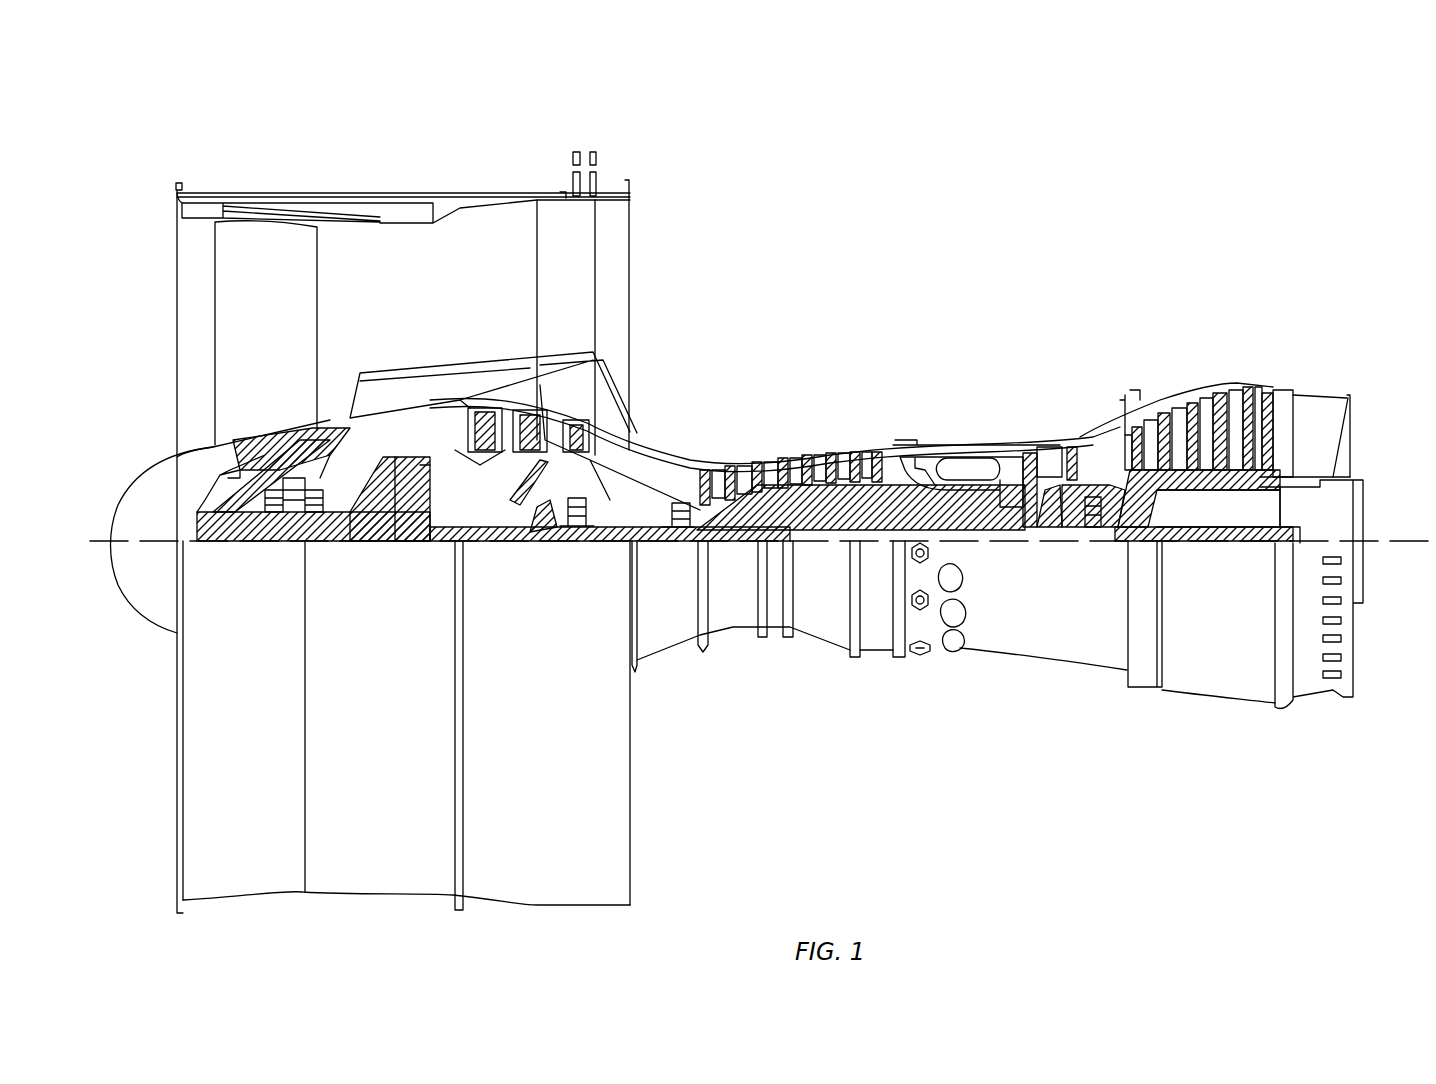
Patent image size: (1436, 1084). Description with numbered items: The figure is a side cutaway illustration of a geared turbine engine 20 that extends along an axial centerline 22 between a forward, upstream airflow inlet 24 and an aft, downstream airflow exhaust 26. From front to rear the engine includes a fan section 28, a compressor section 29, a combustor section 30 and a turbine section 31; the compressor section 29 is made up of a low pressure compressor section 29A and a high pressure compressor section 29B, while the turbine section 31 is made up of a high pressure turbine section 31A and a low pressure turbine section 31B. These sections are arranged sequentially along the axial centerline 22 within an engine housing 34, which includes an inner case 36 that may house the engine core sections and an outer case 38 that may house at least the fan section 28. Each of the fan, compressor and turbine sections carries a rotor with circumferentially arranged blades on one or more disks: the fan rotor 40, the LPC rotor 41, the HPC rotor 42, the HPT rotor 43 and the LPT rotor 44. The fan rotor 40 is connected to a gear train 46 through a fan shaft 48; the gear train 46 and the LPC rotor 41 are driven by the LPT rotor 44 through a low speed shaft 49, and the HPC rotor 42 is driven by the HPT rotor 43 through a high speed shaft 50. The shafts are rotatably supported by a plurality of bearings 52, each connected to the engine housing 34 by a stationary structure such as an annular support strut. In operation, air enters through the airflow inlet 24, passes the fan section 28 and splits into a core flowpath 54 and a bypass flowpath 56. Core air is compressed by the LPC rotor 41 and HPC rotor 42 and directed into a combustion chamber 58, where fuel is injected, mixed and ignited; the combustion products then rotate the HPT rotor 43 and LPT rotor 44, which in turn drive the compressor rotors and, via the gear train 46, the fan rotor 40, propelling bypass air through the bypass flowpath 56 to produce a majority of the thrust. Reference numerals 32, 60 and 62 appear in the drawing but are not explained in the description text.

The geared turbine engine 20 is at (145, 163).
The axial centerline 22 is at (1420, 560).
The airflow inlet 24 is at (177, 275).
The airflow exhaust 26 is at (1355, 428).
The fan section 28 is at (365, 162).
The compressor section 29 is at (878, 102).
The low pressure compressor section 29A is at (631, 152).
The high pressure compressor section 29B is at (878, 335).
The combustor section 30 is at (1012, 335).
The turbine section 31 is at (1307, 255).
The high pressure turbine section 31A is at (1105, 335).
The low pressure turbine section 31B is at (1307, 335).
The turbine exhaust case 32 is at (1358, 318).
The engine housing 34 is at (674, 686).
The inner case 36 is at (873, 652).
The outer case 38 is at (580, 905).
The fan rotor 40 is at (213, 450).
The LPC rotor 41 is at (520, 500).
The HPC rotor 42 is at (818, 500).
The HPT rotor 43 is at (1050, 520).
The LPT rotor 44 is at (1210, 478).
The gear train 46 is at (410, 550).
The fan shaft 48 is at (245, 545).
The low speed shaft 49 is at (1220, 548).
The high speed shaft 50 is at (975, 530).
The bearings 52 is at (275, 512).
The core flowpath 54 is at (668, 448).
The bypass flowpath 56 is at (450, 304).
The combustion chamber 58 is at (968, 470).
The fan hub fairing 60 is at (215, 478).
The fan blade 62 is at (282, 348).